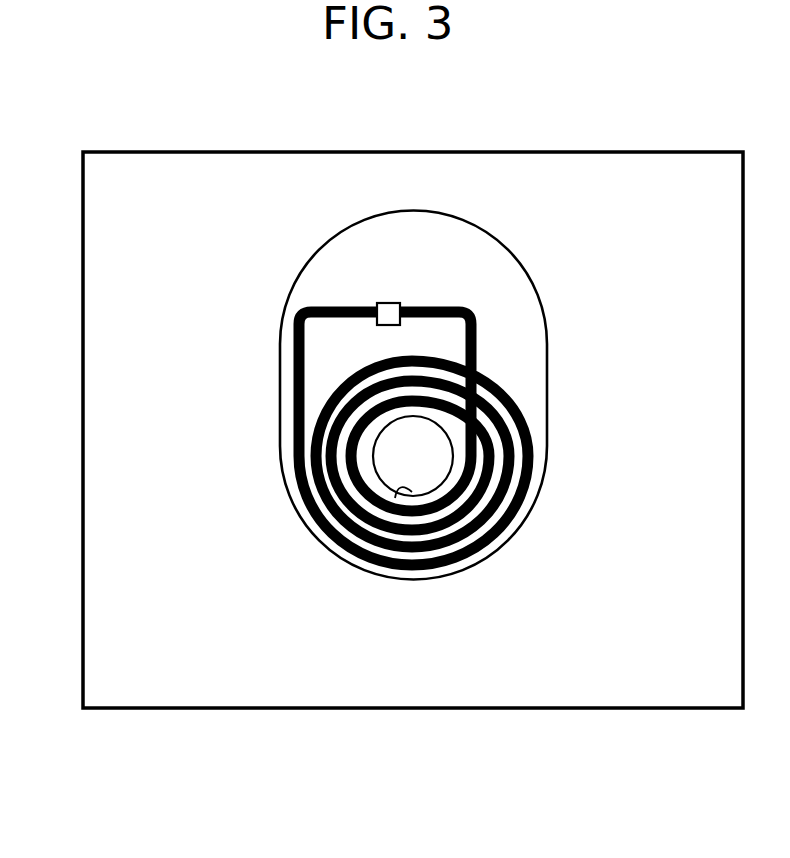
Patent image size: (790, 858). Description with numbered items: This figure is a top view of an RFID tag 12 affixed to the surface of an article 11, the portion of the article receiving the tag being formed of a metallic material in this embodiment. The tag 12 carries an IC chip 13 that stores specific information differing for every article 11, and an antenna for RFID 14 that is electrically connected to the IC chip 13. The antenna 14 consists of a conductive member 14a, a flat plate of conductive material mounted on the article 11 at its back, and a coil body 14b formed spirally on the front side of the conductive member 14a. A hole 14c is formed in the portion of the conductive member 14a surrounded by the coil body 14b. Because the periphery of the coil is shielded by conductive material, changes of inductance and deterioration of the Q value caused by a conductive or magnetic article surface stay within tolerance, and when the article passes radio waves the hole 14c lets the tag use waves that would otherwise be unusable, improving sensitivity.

The article 11 is at (160, 152).
The RFID tag 12 is at (305, 241).
The IC chip 13 is at (387, 302).
The antenna for RFID 14 is at (499, 493).
The conductive member 14a is at (544, 468).
The coil body 14b is at (516, 516).
The hole 14c is at (394, 497).